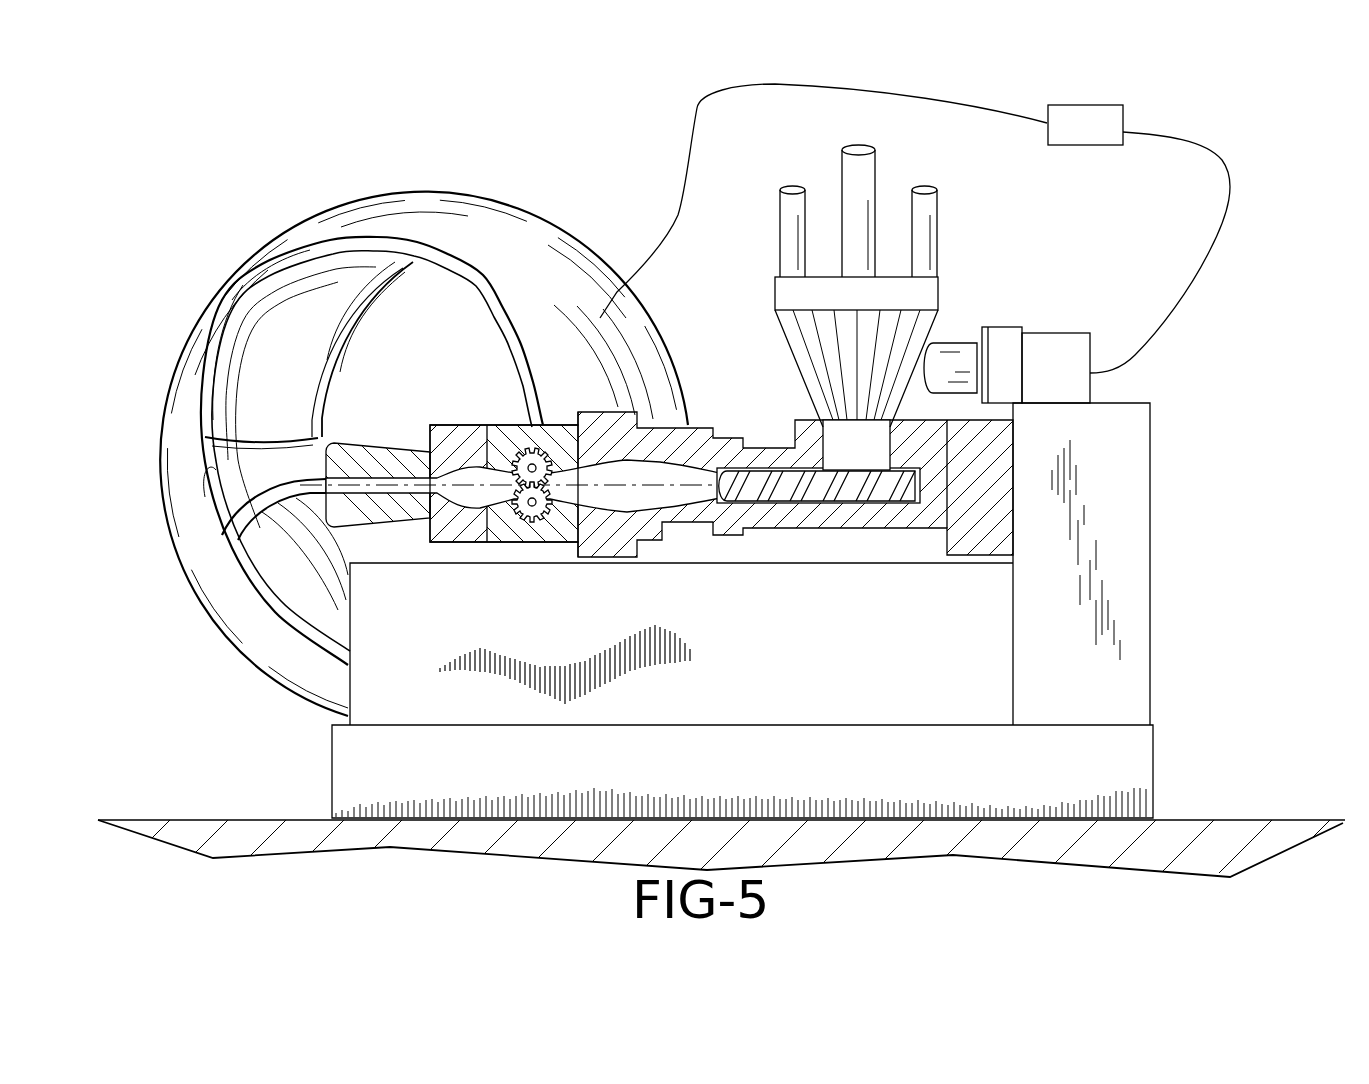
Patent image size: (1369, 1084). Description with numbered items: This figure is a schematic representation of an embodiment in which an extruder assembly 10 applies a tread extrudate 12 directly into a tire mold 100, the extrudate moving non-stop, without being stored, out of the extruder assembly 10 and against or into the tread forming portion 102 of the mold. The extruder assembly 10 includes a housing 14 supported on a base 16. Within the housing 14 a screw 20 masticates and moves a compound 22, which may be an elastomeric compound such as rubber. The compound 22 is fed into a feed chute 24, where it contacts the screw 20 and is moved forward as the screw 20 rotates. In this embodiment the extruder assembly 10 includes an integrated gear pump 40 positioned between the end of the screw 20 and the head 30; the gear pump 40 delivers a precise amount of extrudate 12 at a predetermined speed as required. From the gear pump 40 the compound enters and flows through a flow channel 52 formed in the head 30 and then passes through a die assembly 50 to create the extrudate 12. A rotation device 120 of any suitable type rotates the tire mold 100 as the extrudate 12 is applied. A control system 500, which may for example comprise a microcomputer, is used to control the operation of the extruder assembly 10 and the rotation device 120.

The extruder assembly 10 is at (1097, 295).
The extrudate 12 is at (240, 535).
The housing 14 is at (862, 518).
The base 16 is at (400, 785).
The screw 20 is at (773, 492).
The compound 22 is at (860, 170).
The feed chute 24 is at (790, 298).
The head 30 is at (372, 455).
The gear pump 40 is at (553, 438).
The die assembly 50 is at (323, 467).
The flow channel 52 is at (383, 488).
The tire mold 100 is at (320, 263).
The tread forming portion 102 is at (203, 510).
The rotation device 120 is at (578, 270).
The control system 500 is at (1090, 120).